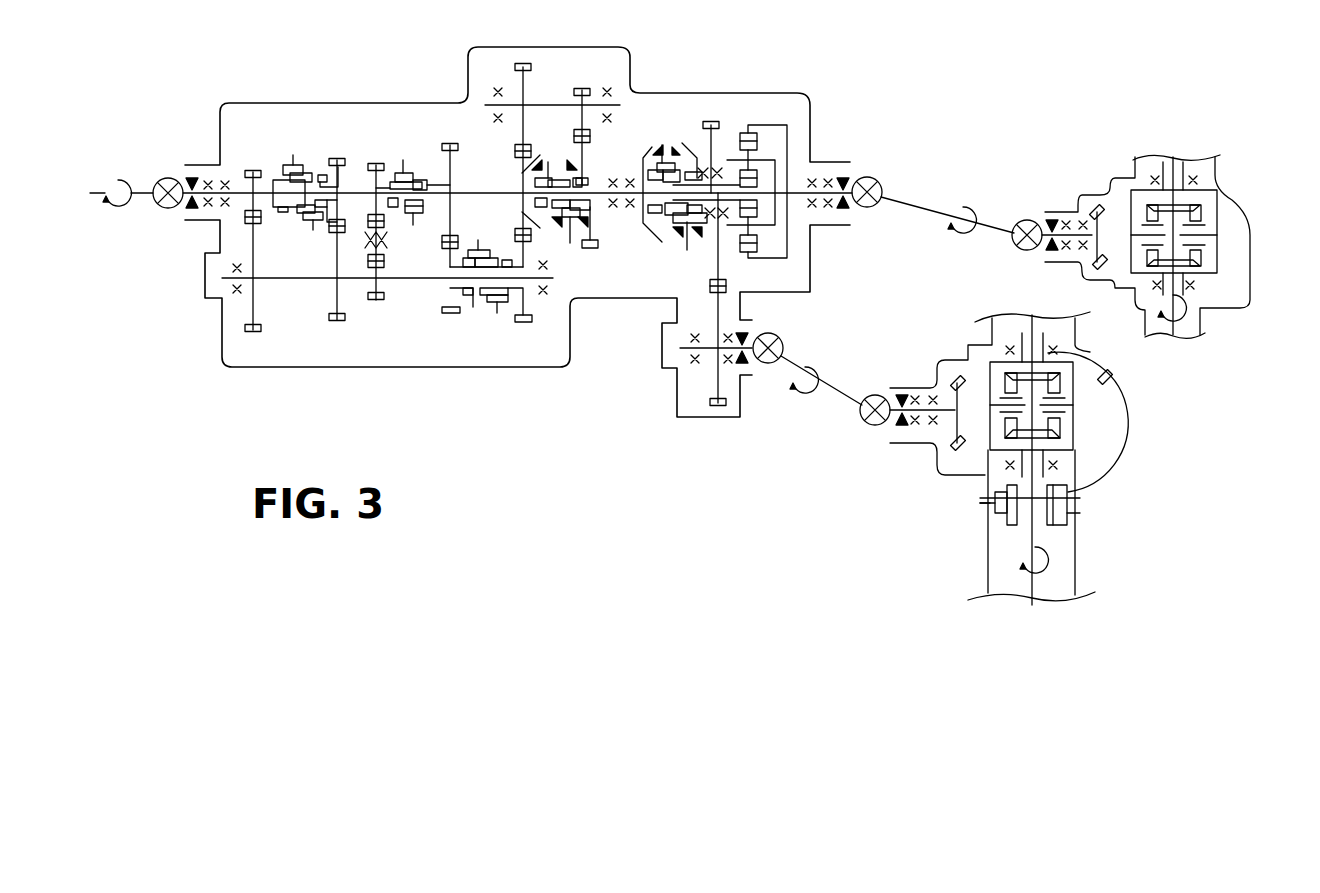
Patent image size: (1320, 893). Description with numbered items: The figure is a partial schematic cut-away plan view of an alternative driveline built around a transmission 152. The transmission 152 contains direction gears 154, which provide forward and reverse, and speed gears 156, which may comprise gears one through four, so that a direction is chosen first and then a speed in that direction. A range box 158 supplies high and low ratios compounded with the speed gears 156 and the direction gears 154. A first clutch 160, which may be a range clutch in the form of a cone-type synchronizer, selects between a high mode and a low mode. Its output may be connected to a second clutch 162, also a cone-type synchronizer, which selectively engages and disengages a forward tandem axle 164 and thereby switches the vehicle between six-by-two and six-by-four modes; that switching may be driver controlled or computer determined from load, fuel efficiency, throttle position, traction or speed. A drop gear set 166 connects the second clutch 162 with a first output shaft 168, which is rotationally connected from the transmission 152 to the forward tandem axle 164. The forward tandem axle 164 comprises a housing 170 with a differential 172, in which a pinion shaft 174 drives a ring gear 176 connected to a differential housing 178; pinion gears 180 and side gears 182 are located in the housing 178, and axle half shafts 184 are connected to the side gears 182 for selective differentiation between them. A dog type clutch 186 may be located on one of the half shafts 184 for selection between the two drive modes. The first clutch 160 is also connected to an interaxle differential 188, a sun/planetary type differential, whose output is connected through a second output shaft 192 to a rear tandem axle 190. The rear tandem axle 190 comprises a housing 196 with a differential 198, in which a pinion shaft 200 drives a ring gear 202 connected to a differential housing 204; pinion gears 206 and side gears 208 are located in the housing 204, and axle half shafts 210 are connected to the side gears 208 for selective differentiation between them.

The transmission 152 is at (448, 370).
The direction gears 154 is at (318, 145).
The speed gears 156 is at (233, 348).
The range box 158 is at (550, 85).
The first clutch 160 is at (578, 258).
The second clutch 162 is at (705, 108).
The forward tandem axle 164 is at (1053, 447).
The drop gear set 166 is at (733, 280).
The first output shaft 168 is at (840, 402).
The housing 170 is at (1120, 470).
The differential 172 is at (1080, 420).
The pinion shaft 174 is at (895, 420).
The ring gear 176 is at (968, 370).
The differential housing 178 is at (1100, 400).
The pinion gears 180 is at (1060, 378).
The side gears 182 is at (1065, 430).
The axle half shafts 184 is at (1025, 318).
The dog type clutch 186 is at (1005, 522).
The interaxle differential 188 is at (775, 118).
The rear tandem axle 190 is at (1163, 224).
The second output shaft 192 is at (903, 192).
The housing 196 is at (1252, 232).
The differential 198 is at (1140, 200).
The pinion shaft 200 is at (1033, 220).
The ring gear 202 is at (1100, 280).
The differential housing 204 is at (1220, 265).
The pinion gears 206 is at (1210, 205).
The side gears 208 is at (1200, 268).
The axle half shafts 210 is at (1173, 160).